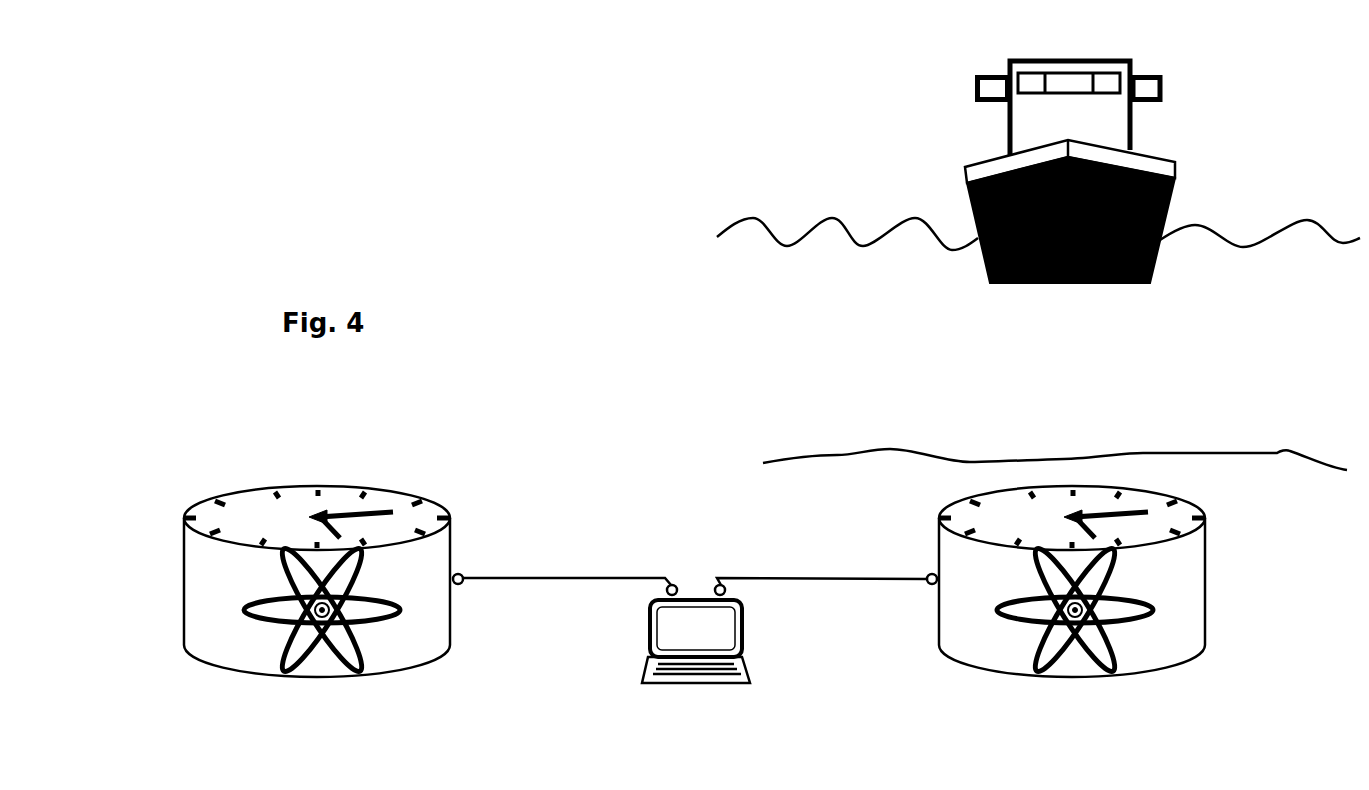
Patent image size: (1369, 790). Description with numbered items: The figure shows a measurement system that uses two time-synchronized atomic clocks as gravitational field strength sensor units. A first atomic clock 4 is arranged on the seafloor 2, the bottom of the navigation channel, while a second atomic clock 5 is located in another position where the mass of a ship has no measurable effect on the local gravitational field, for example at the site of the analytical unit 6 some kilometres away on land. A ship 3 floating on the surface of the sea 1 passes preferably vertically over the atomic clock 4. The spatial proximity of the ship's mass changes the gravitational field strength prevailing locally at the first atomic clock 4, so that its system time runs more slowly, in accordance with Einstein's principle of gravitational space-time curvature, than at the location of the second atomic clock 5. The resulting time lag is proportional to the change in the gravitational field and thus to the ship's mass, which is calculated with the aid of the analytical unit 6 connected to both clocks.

The surface of the sea 1 is at (717, 237).
The seafloor 2 is at (837, 455).
The ship 3 is at (1117, 133).
The first atomic clock 4 is at (1187, 585).
The second atomic clock 5 is at (202, 580).
The analytical unit 6 is at (718, 632).